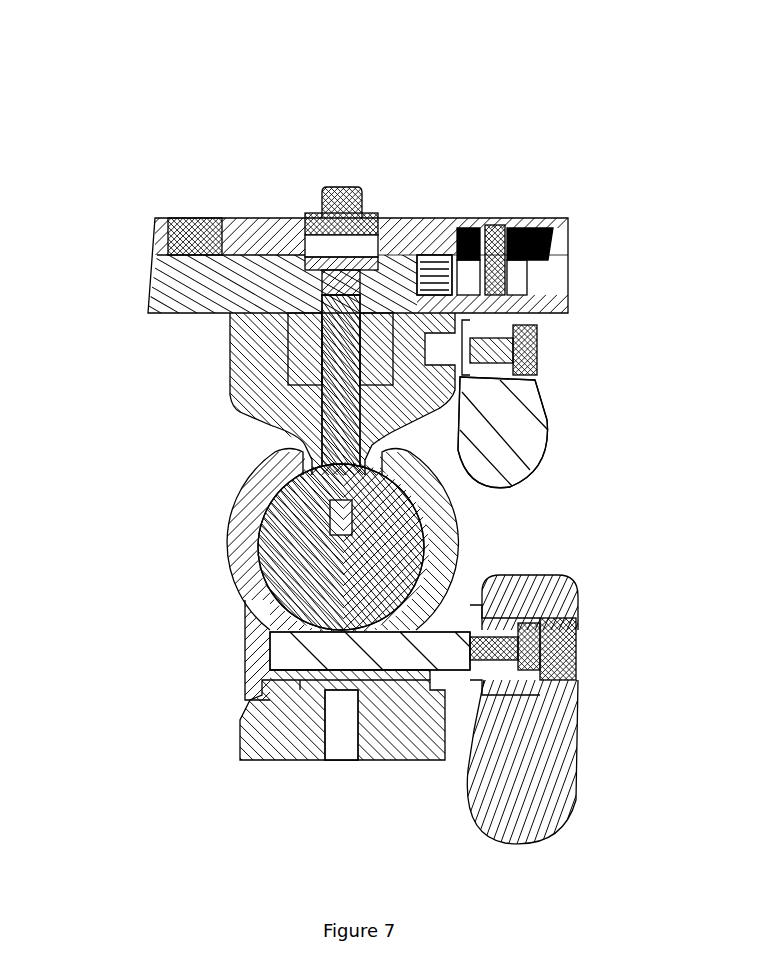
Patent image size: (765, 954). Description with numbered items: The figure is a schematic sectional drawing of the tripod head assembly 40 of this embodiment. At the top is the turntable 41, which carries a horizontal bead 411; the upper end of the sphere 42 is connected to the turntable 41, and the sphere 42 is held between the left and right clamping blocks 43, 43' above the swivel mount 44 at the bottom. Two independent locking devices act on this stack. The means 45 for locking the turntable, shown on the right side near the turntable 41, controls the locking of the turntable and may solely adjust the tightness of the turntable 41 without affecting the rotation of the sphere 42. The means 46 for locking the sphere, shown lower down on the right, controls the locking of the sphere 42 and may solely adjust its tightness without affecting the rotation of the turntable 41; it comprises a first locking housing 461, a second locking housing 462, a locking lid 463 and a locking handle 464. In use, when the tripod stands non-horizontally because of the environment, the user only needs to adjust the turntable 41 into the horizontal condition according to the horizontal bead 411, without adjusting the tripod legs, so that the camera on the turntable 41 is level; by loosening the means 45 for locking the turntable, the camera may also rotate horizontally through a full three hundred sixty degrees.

The tripod head assembly 40 is at (433, 168).
The turntable 41 is at (150, 278).
The horizontal bead 411 is at (178, 218).
The sphere 42 is at (247, 402).
The left clamping block 43 is at (382, 477).
The right clamping block 43' is at (382, 477).
The swivel mount 44 is at (288, 738).
The means for locking the turntable 45 is at (520, 405).
The means for locking the sphere 46 is at (598, 750).
The first locking housing 461 is at (305, 645).
The second locking housing 462 is at (545, 578).
The locking lid 463 is at (572, 620).
The locking handle 464 is at (535, 720).